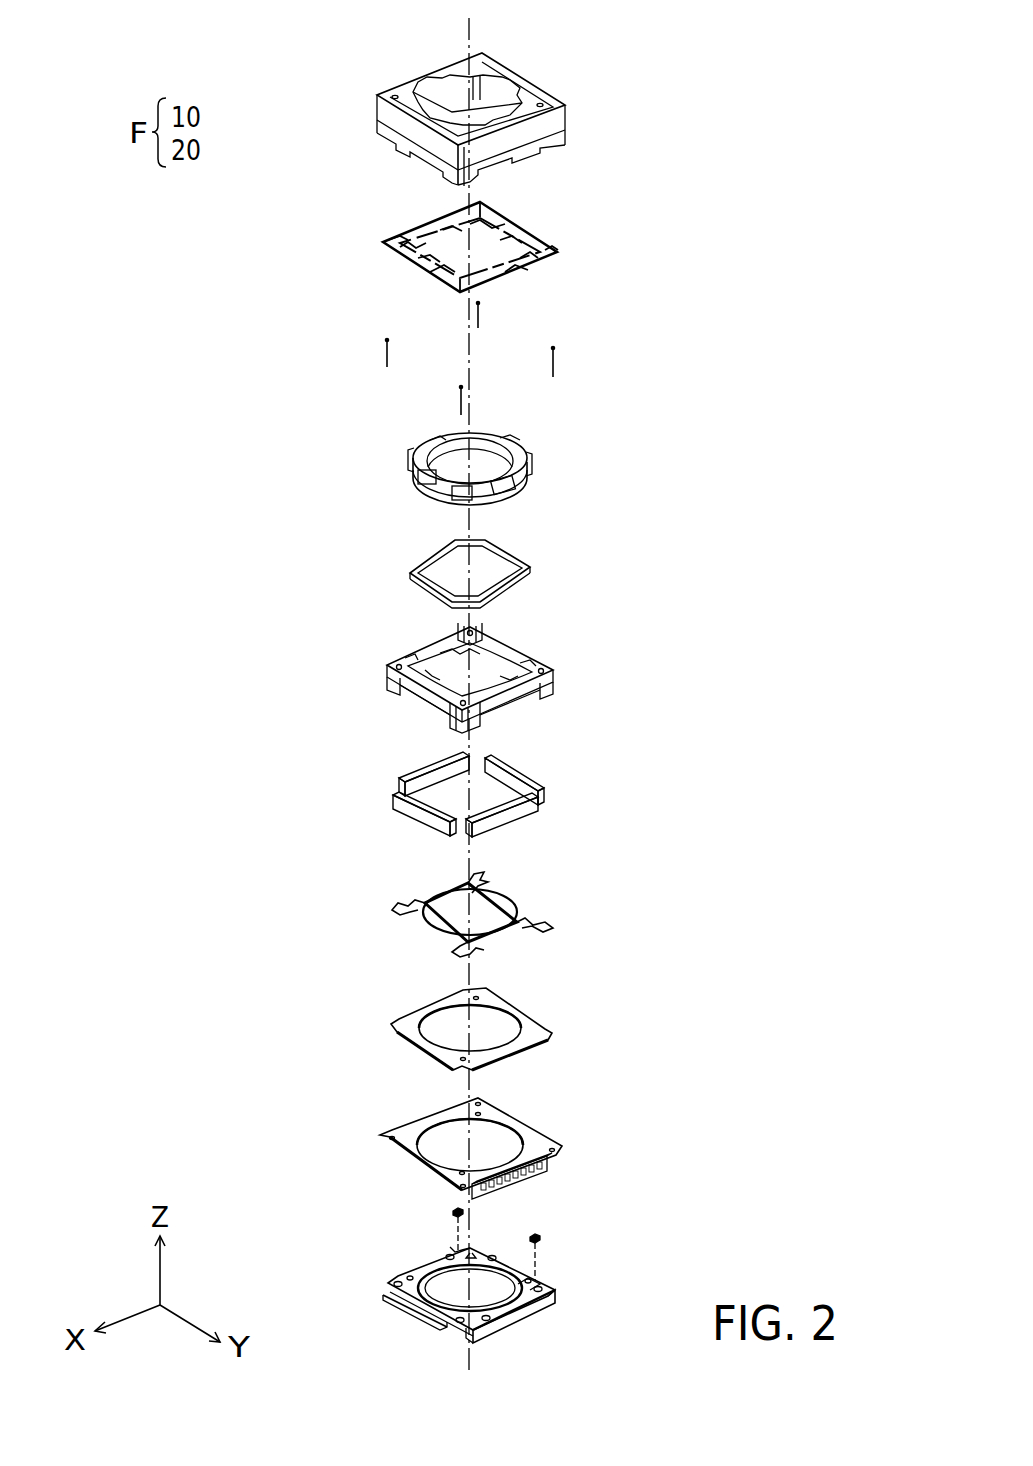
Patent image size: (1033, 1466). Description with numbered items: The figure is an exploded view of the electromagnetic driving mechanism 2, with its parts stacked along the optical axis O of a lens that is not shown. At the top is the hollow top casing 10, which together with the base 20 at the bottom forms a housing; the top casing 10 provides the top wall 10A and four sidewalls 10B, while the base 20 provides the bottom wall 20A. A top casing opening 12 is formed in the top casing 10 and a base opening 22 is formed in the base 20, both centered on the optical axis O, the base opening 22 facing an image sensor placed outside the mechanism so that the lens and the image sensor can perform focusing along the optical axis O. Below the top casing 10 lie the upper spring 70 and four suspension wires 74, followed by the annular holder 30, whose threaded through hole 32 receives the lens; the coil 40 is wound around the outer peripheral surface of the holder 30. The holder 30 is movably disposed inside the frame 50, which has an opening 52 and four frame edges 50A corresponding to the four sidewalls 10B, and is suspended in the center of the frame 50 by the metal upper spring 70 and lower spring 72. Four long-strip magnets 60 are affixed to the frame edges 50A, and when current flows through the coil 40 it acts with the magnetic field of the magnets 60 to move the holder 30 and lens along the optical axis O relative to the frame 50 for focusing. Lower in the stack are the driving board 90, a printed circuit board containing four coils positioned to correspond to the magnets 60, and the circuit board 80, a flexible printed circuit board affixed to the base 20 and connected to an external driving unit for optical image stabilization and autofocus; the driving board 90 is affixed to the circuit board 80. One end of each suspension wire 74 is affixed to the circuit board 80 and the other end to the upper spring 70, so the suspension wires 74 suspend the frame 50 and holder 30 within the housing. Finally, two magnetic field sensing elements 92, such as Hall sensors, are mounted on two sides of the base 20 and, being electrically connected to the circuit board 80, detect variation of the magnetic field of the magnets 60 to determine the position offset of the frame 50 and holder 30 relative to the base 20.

The electromagnetic driving mechanism 2 is at (673, 88).
The optical axis O is at (470, 687).
The top casing 10 is at (464, 109).
The top wall 10A is at (412, 92).
The sidewalls 10B is at (423, 148).
The top casing opening 12 is at (505, 90).
The base 20 is at (431, 1294).
The bottom wall 20A is at (413, 1312).
The base opening 22 is at (453, 1282).
The holder 30 is at (467, 465).
The through hole 32 is at (487, 468).
The coil 40 is at (408, 562).
The frame 50 is at (465, 667).
The frame edges 50A is at (405, 690).
The opening 52 is at (510, 675).
The magnets 60 is at (397, 782).
The upper spring 70 is at (375, 240).
The lower spring 72 is at (383, 912).
The suspension wires 74 is at (483, 314).
The circuit board 80 is at (378, 1138).
The driving board 90 is at (383, 1029).
The magnetic field sensing elements 92 is at (455, 1210).